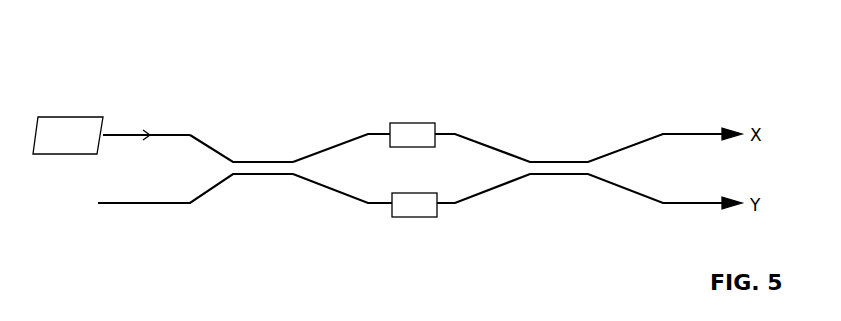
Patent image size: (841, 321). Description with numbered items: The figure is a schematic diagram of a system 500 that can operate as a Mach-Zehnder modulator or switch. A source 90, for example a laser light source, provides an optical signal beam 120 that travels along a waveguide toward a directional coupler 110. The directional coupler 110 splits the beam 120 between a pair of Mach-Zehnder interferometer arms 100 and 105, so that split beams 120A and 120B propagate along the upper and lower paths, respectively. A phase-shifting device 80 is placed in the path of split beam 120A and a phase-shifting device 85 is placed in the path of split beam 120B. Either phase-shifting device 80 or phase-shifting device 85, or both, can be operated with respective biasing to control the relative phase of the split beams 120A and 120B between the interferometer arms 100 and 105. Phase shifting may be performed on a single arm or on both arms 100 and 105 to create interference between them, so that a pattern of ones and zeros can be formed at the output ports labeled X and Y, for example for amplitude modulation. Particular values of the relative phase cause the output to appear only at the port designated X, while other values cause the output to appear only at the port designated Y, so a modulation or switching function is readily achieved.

The system 500 is at (130, 62).
The source 90 is at (68, 135).
The optical signal beam 120 is at (160, 135).
The directional coupler 110 is at (258, 162).
The split beam 120A is at (337, 143).
The split beam 120B is at (330, 190).
The phase-shifting device 80 is at (430, 122).
The phase-shifting device 85 is at (412, 217).
The interferometer arm 100 is at (495, 150).
The interferometer arm 105 is at (485, 193).